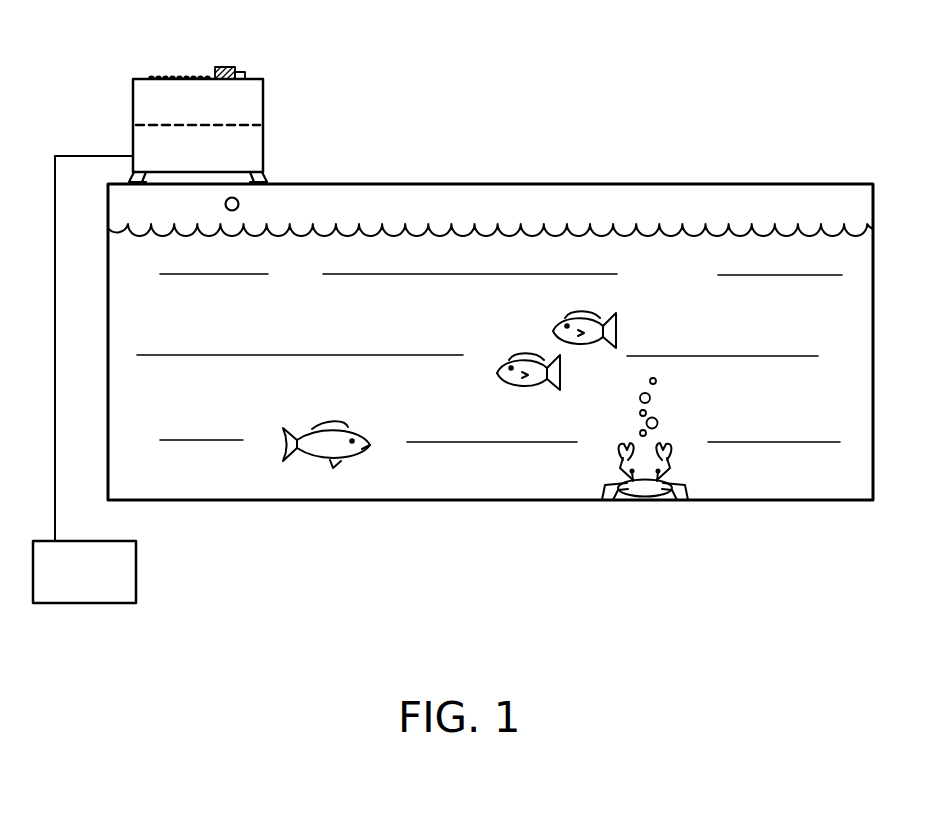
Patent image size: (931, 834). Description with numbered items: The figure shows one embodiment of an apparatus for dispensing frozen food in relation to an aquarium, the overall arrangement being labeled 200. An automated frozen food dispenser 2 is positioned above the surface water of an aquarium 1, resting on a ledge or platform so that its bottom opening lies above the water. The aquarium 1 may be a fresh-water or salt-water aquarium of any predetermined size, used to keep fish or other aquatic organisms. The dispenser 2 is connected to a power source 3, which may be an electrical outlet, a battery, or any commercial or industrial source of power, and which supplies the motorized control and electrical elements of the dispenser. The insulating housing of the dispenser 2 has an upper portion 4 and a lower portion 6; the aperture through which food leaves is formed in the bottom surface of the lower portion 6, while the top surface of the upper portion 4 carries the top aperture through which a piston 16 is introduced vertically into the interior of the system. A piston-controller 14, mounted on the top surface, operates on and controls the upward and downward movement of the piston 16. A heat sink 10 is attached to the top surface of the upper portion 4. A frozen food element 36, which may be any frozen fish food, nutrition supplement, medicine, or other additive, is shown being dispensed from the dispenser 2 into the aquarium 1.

The aquarium 1 is at (673, 277).
The automated frozen food dispenser 2 is at (215, 101).
The power source 3 is at (136, 570).
The upper portion 4 is at (145, 101).
The lower portion 6 is at (145, 138).
The heat sink 10 is at (175, 76).
The piston-controller 14 is at (232, 67).
The piston 16 is at (247, 73).
The frozen food element 36 is at (240, 203).
The water treatment system 200 is at (216, 312).